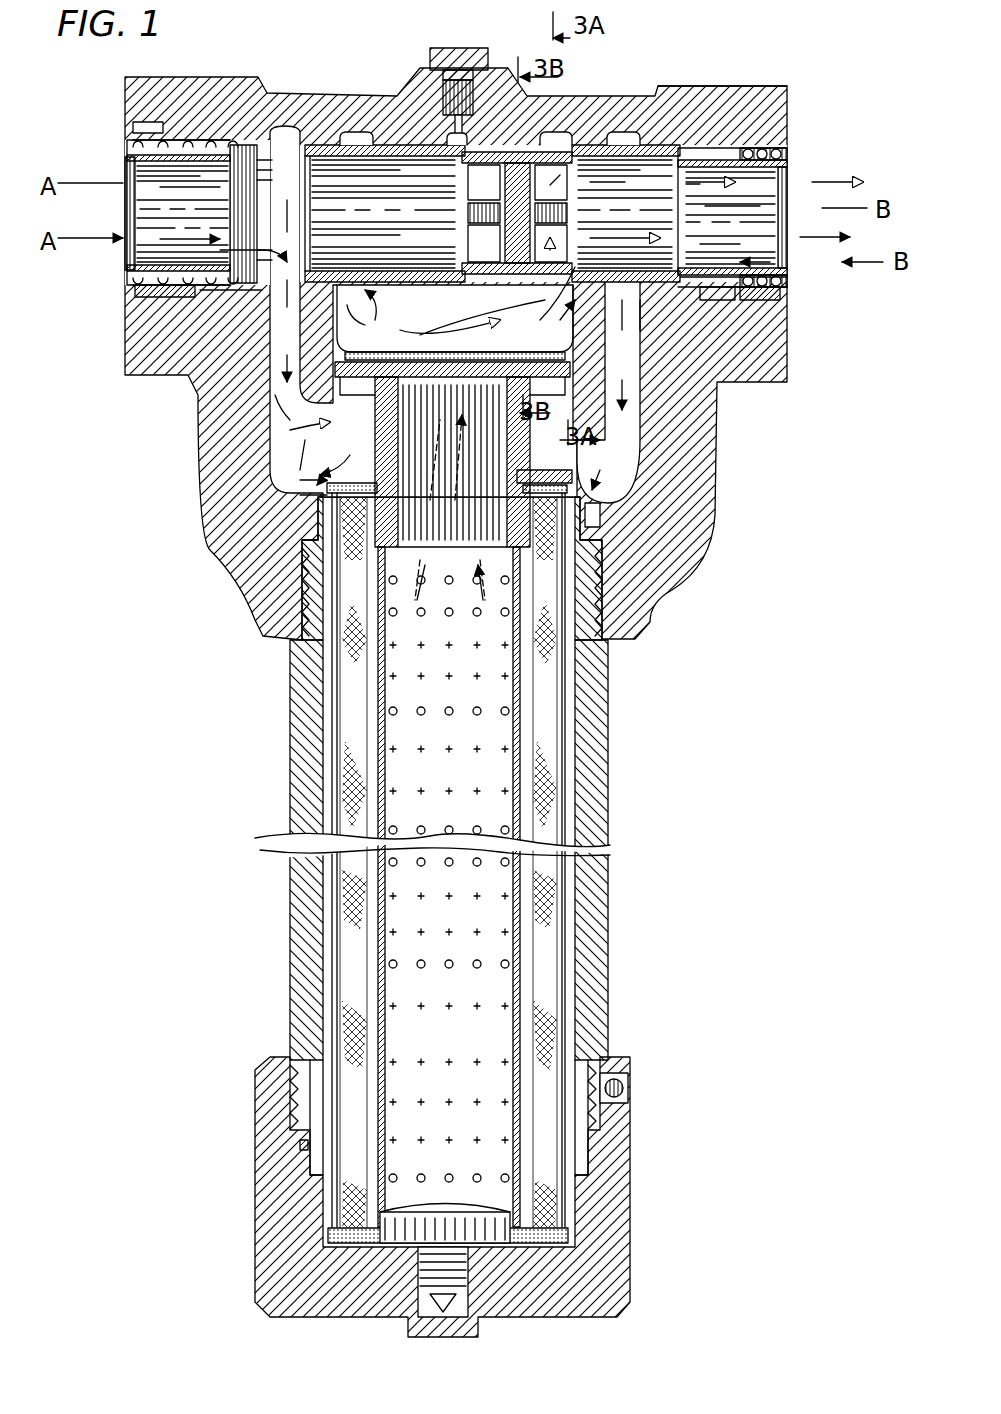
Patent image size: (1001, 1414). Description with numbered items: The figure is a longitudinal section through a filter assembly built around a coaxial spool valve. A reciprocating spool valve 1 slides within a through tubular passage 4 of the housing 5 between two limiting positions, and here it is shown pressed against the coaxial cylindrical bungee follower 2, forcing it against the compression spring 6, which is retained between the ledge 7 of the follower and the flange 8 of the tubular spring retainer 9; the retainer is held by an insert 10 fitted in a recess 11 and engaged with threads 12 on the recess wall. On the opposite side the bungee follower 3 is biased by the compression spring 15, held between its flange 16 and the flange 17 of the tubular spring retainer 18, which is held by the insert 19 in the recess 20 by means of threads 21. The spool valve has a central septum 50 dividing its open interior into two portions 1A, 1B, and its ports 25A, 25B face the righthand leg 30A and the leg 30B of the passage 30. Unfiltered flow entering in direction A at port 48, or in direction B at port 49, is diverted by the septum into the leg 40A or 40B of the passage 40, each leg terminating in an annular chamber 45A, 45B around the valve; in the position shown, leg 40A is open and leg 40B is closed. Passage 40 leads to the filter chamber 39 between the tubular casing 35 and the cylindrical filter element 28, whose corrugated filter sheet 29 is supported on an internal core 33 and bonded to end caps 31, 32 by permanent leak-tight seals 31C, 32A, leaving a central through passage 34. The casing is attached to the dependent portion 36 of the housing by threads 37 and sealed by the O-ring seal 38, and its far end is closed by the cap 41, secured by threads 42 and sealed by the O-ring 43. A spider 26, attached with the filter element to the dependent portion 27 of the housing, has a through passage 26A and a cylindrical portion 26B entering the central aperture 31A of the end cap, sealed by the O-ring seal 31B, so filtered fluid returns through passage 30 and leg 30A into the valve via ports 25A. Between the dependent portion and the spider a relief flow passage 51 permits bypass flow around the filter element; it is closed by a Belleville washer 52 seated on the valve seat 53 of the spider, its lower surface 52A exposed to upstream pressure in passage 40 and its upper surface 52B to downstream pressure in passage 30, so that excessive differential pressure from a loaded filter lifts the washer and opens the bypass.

The spool valve 1 is at (390, 146).
The open interior portion of spool valve 1A is at (626, 213).
The open interior portion of spool valve 1B is at (342, 213).
The bungee follower 2 is at (740, 150).
The bungee follower 3 is at (246, 142).
The through tubular passage 4 is at (298, 194).
The housing 5 is at (682, 87).
The compression spring 6 is at (735, 291).
The ledge 7 is at (767, 295).
The flange 8 is at (787, 280).
The tubular spring retainer 9 is at (723, 267).
The insert 10 is at (765, 145).
The recess 11 is at (735, 142).
The threads 12 is at (757, 299).
The compression spring 15 is at (197, 297).
The flange 16 is at (240, 293).
The flange 17 is at (133, 273).
The tubular spring retainer 18 is at (152, 257).
The insert 19 is at (133, 128).
The recess 20 is at (188, 130).
The threads 21 is at (152, 122).
The ports 25A is at (566, 198).
The ports 25B is at (472, 190).
The spider 26 is at (322, 140).
The through passage 26A is at (462, 530).
The cylindrical portion 26B is at (462, 480).
The dependent portion of housing 27 is at (642, 452).
The filter element 28 is at (568, 790).
The corrugated filter sheet 29 is at (552, 757).
The passage 30 is at (460, 334).
The righthand leg of passage 30 30A is at (573, 267).
The leg of passage 30 30B is at (347, 305).
The end cap 31 is at (572, 507).
The central aperture 31A is at (590, 500).
The O-ring seal 31B is at (325, 482).
The leak-tight seal 31C is at (322, 490).
The end cap 32 is at (570, 1235).
The leak-tight seal 32A is at (330, 1240).
The internal core 33 is at (508, 807).
The central through passage 34 is at (465, 742).
The tubular casing 35 is at (608, 950).
The dependent portion of housing 36 is at (712, 517).
The threads 37 is at (298, 624).
The O-ring seal 38 is at (303, 552).
The filter chamber 39 is at (320, 868).
The passage 40 is at (357, 467).
The leg of passage 40 40A is at (287, 383).
The leg of passage 40 40B is at (641, 298).
The cap 41 is at (618, 1156).
The threads 42 is at (293, 1097).
The O-ring 43 is at (300, 1146).
The annular chamber 45A is at (302, 133).
The annular chamber 45B is at (618, 137).
The port 48 is at (133, 157).
The port 49 is at (787, 158).
The central septum 50 is at (517, 187).
The relief flow passage 51 is at (314, 461).
The Belleville washer 52 is at (385, 363).
The lower surface of Belleville washer 52A is at (433, 457).
The upper surface of Belleville washer 52B is at (484, 457).
The valve seat 53 is at (403, 367).